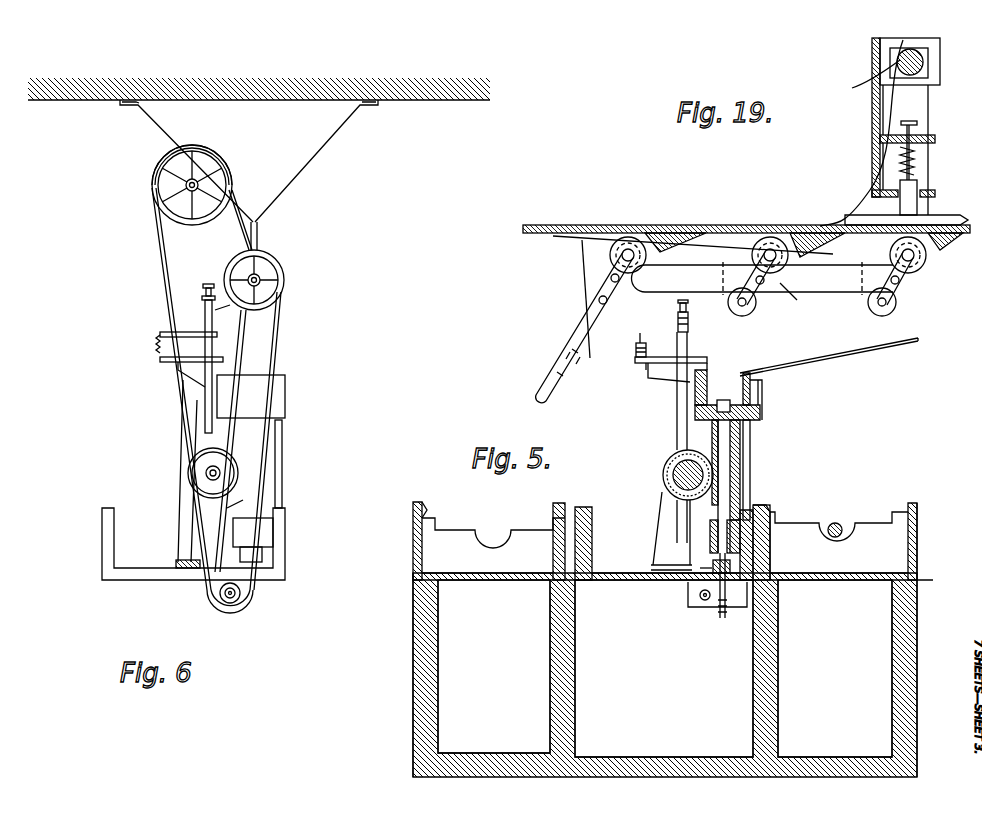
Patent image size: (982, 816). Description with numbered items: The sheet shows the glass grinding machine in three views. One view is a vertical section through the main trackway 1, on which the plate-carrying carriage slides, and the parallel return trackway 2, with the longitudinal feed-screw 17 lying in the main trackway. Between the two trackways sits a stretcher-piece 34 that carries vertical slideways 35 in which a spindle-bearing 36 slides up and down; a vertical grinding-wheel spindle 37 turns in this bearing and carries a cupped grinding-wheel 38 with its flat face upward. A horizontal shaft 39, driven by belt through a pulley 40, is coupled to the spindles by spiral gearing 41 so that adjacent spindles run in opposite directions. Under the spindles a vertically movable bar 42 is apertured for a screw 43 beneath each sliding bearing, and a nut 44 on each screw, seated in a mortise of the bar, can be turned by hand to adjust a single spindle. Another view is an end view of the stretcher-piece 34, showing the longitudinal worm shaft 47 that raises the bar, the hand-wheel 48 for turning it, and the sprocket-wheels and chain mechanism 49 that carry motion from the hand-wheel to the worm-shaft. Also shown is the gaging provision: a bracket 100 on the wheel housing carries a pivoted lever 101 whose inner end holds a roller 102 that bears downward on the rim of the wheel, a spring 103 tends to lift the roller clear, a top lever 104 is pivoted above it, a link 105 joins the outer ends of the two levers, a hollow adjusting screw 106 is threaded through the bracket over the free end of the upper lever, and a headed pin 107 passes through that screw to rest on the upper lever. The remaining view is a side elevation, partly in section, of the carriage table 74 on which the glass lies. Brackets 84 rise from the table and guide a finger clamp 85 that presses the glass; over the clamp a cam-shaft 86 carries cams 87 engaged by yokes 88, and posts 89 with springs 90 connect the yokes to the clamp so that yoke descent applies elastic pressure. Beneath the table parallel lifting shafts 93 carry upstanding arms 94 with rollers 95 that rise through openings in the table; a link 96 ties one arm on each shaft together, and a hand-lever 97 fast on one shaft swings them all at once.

In FIG. 5, the main trackway 1 is at (910, 506).
In FIG. 5, the return trackway 2 is at (420, 504).
In FIG. 5, the longitudinal feed-screw 17 is at (834, 523).
In FIG. 6, the stretcher-piece 34 is at (108, 548).
In FIG. 5, the stretcher-piece 34 is at (590, 545).
In FIG. 6, the vertical slideway 35 is at (282, 455).
In FIG. 5, the vertical slideway 35 is at (750, 460).
In FIG. 6, the spindle-bearing 36 is at (273, 537).
In FIG. 5, the spindle-bearing 36 is at (742, 436).
In FIG. 6, the vertical grinding-wheel spindle 37 is at (213, 515).
In FIG. 5, the vertical grinding-wheel spindle 37 is at (712, 430).
In FIG. 5, the grinding-wheel 38 is at (700, 388).
In FIG. 6, the horizontal shaft 39 is at (210, 476).
In FIG. 5, the horizontal shaft 39 is at (665, 471).
In FIG. 6, the pulley 40 is at (205, 460).
In FIG. 5, the gearing 41 is at (666, 487).
In FIG. 5, the vertically movable bar 42 is at (733, 563).
In FIG. 5, the screw 43 is at (722, 618).
In FIG. 5, the nut 44 is at (710, 567).
In FIG. 6, the longitudinal shaft 47 is at (236, 602).
In FIG. 5, the longitudinal shaft 47 is at (690, 600).
In FIG. 6, the hand-wheel 48 is at (283, 275).
In FIG. 6, the sprocket-wheels and chain mechanism 49 is at (277, 345).
In FIG. 19, the glass-carrying table 74 is at (700, 224).
In FIG. 19, the bracket 84 is at (883, 112).
In FIG. 19, the clamp 85 is at (955, 211).
In FIG. 19, the cam-shaft 86 is at (925, 56).
In FIG. 19, the cam 87 is at (860, 81).
In FIG. 19, the yoke 88 is at (936, 73).
In FIG. 19, the post 89 is at (916, 158).
In FIG. 19, the spring 90 is at (916, 180).
In FIG. 19, the lifting shaft 93 is at (756, 313).
In FIG. 19, the arm 94 is at (795, 300).
In FIG. 19, the roller 95 is at (763, 236).
In FIG. 19, the link 96 is at (763, 278).
In FIG. 19, the hand-lever 97 is at (575, 310).
In FIG. 5, the bracket 100 is at (650, 378).
In FIG. 5, the lever 101 is at (700, 357).
In FIG. 5, the roller 102 is at (707, 372).
In FIG. 5, the spring 103 is at (648, 365).
In FIG. 5, the top lever 104 is at (638, 340).
In FIG. 5, the link 105 is at (636, 350).
In FIG. 5, the hollow adjusting screw 106 is at (690, 318).
In FIG. 5, the headed pin 107 is at (678, 304).